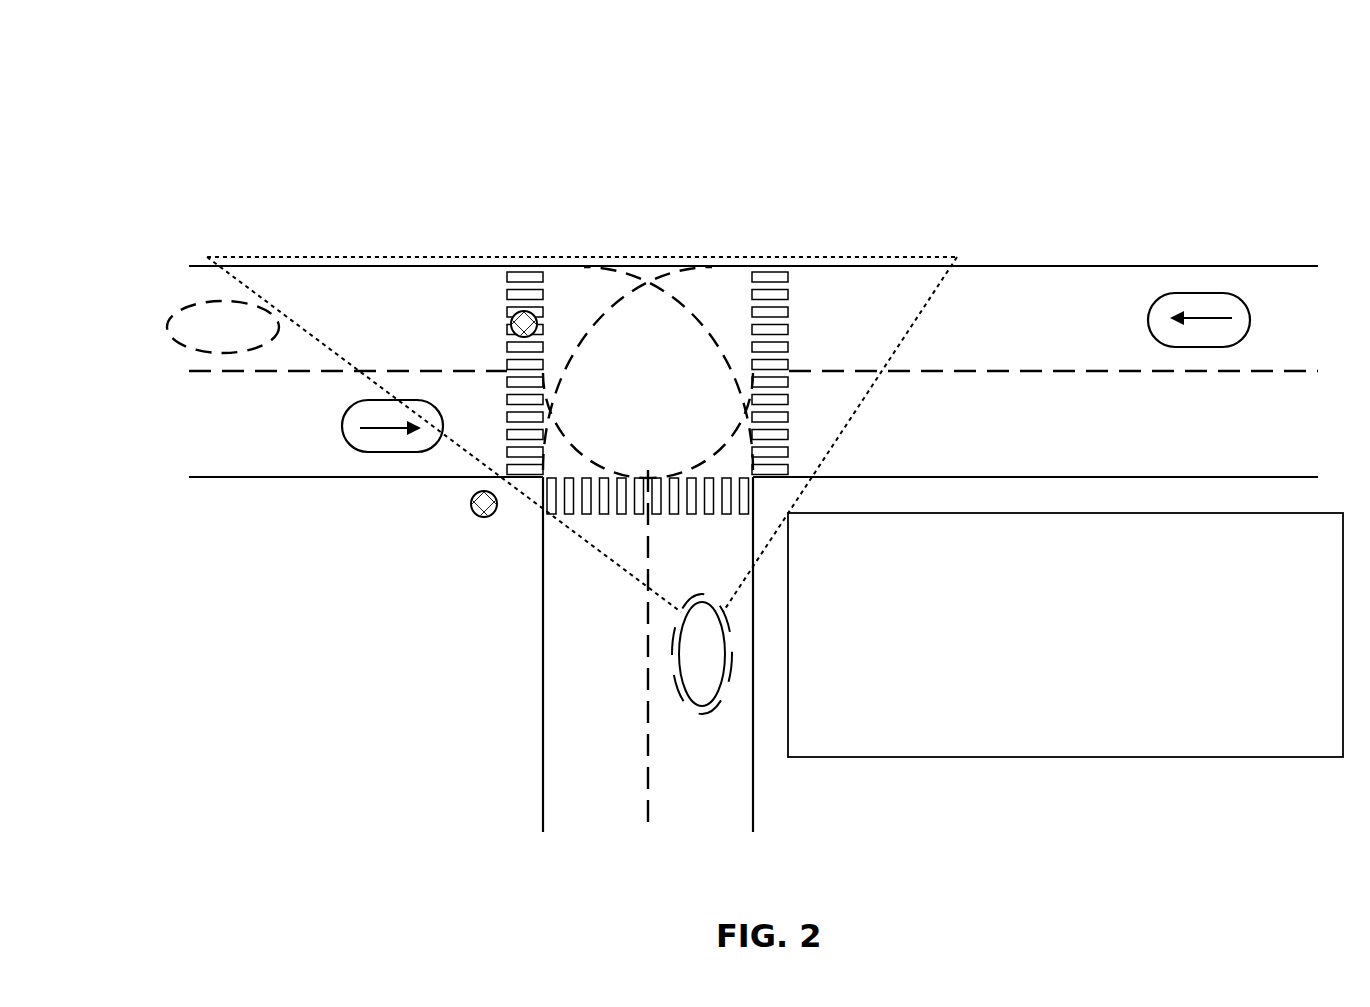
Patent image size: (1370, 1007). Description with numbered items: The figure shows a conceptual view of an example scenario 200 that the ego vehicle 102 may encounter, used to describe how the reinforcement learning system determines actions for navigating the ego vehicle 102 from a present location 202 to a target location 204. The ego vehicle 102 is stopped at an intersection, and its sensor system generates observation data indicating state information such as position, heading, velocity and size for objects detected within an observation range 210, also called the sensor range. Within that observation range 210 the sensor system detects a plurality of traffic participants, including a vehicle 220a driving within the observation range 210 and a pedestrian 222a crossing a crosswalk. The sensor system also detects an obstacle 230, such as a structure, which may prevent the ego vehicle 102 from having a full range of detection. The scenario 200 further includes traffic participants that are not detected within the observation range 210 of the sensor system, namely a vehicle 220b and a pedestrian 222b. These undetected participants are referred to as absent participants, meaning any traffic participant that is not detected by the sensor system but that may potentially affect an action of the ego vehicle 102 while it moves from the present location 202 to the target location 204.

The scenario 200 is at (322, 67).
The observation range 210 is at (294, 257).
The present location 202 is at (523, 275).
The target location 204 is at (205, 300).
The pedestrian 222a is at (512, 325).
The pedestrian 222b is at (473, 515).
The vehicle 220a is at (342, 430).
The vehicle 220b is at (1150, 323).
The ego vehicle 102 is at (675, 678).
The obstacle 230 is at (1139, 647).